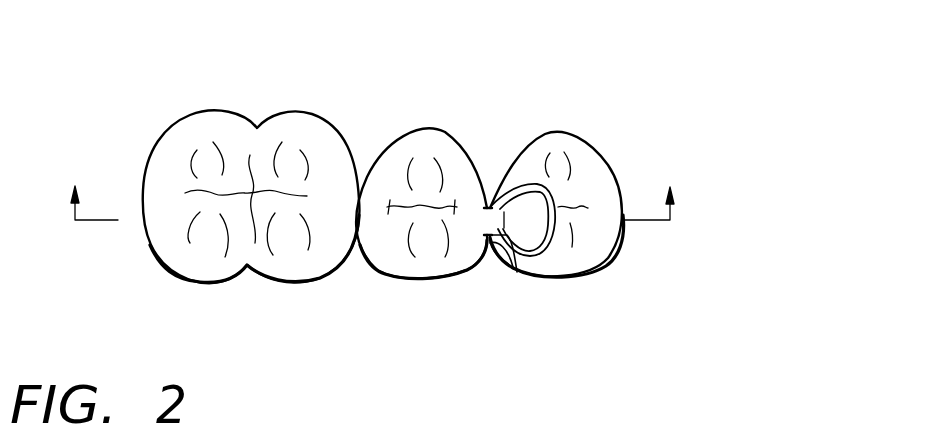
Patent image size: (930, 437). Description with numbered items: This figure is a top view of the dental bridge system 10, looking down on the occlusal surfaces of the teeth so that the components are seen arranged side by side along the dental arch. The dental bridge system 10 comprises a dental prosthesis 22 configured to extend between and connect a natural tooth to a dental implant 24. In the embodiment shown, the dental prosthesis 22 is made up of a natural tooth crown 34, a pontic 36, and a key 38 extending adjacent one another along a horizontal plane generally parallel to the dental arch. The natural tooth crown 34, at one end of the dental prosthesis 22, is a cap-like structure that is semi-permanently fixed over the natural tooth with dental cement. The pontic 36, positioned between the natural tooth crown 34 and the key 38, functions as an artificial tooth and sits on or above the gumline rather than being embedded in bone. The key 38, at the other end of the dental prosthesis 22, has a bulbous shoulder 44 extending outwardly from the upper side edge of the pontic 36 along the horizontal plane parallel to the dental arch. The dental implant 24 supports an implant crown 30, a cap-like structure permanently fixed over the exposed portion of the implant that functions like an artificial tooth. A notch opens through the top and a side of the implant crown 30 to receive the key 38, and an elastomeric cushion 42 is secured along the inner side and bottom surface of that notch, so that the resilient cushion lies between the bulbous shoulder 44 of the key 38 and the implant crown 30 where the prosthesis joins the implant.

The dental bridge system 10 is at (586, 54).
The dental prosthesis 22 is at (326, 104).
The dental implant 24 is at (629, 252).
The implant crown 30 is at (533, 152).
The natural tooth crown 34 is at (185, 132).
The pontic 36 is at (395, 253).
The key 38 is at (513, 258).
The elastomeric cushion 42 is at (552, 197).
The bulbous shoulder 44 is at (533, 200).